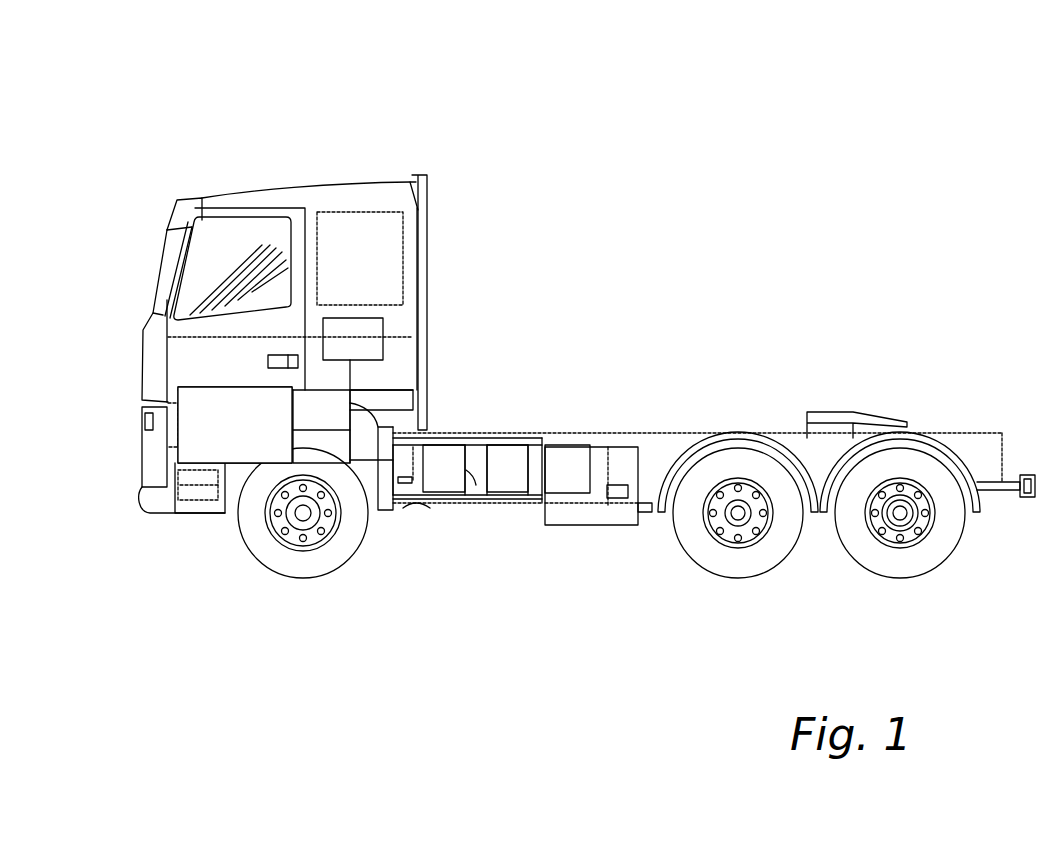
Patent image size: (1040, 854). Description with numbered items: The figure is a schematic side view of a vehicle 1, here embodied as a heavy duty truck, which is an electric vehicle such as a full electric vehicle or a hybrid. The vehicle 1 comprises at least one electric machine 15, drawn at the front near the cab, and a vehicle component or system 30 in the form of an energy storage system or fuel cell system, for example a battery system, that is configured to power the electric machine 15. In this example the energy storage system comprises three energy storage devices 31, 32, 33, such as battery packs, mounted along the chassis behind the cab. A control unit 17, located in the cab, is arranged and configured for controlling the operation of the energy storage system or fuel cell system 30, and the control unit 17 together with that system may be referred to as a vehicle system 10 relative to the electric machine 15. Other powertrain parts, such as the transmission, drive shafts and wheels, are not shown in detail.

The vehicle 1 is at (252, 117).
The vehicle system 10 is at (462, 380).
The electric machine 15 is at (197, 467).
The control unit 17 is at (383, 323).
The vehicle component or system 30 is at (522, 405).
The energy storage device 31 is at (445, 493).
The energy storage device 32 is at (500, 495).
The energy storage device 33 is at (565, 493).